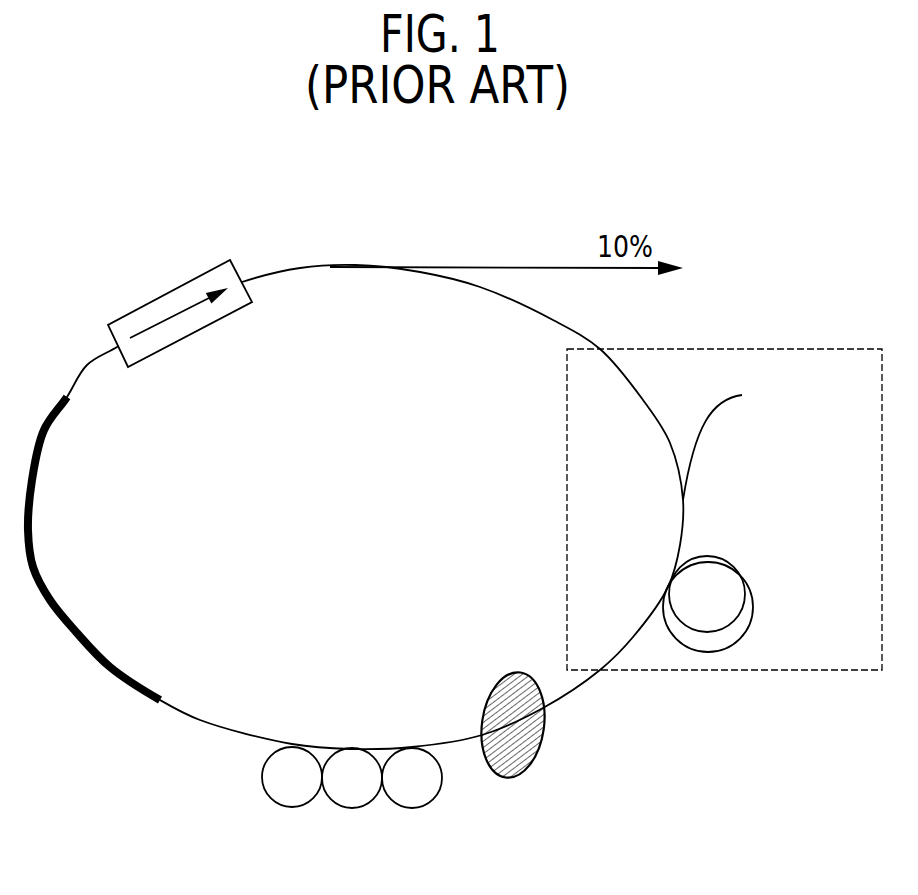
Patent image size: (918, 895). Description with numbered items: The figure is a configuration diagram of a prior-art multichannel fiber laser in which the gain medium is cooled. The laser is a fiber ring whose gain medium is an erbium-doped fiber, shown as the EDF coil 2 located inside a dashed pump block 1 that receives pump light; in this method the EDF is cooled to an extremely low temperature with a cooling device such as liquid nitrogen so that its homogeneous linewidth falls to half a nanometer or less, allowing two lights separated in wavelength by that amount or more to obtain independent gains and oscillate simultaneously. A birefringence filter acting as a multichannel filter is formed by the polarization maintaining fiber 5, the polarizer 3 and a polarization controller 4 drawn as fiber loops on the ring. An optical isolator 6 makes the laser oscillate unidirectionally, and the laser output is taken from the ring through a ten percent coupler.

The pump module (erbium-doped fiber amplifier with pump) 1 is at (800, 349).
The erbium-doped fiber (EDF) coil 2 is at (753, 587).
The polarizer 3 is at (543, 745).
The polarization controller 4 is at (345, 810).
The polarization maintaining fiber (PMF) 5 is at (40, 527).
The optical isolator 6 is at (190, 335).